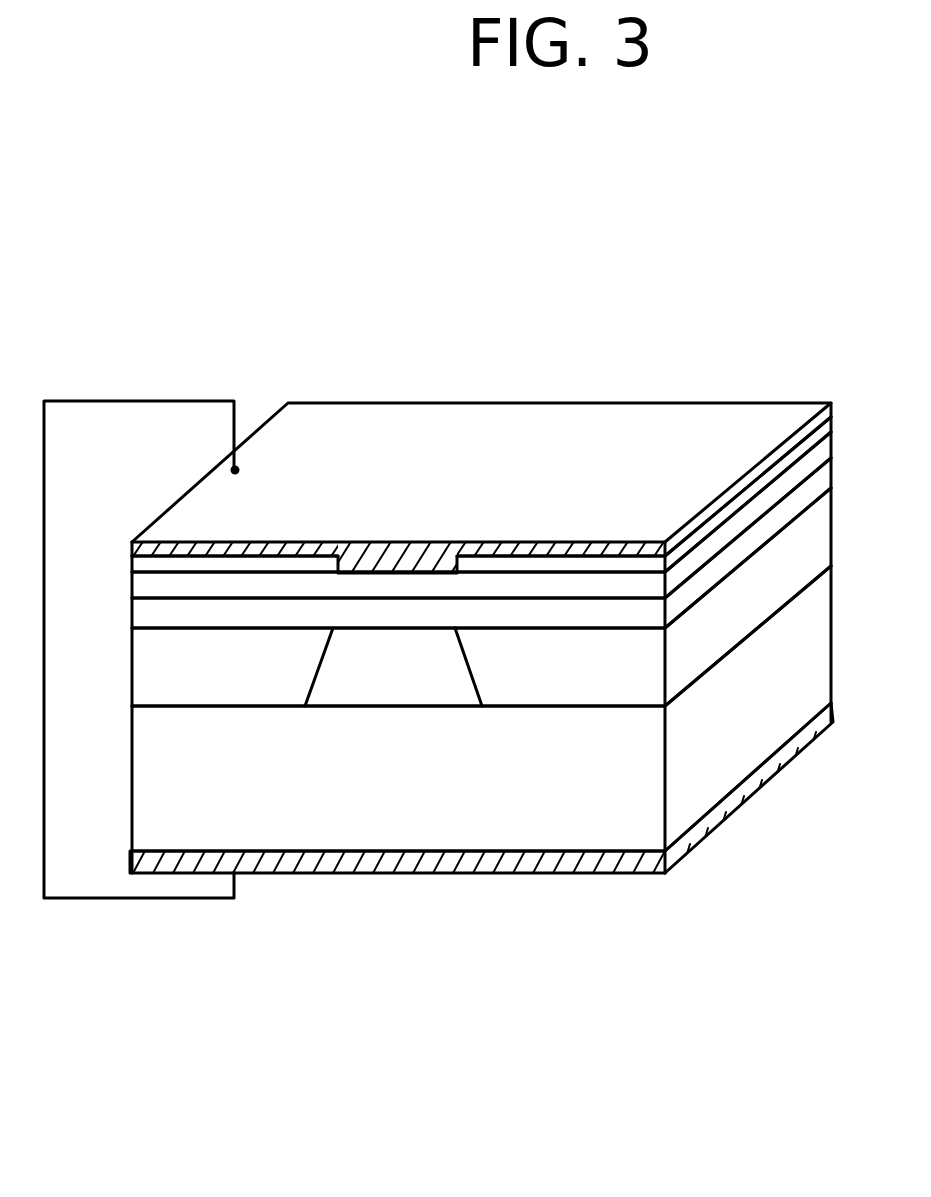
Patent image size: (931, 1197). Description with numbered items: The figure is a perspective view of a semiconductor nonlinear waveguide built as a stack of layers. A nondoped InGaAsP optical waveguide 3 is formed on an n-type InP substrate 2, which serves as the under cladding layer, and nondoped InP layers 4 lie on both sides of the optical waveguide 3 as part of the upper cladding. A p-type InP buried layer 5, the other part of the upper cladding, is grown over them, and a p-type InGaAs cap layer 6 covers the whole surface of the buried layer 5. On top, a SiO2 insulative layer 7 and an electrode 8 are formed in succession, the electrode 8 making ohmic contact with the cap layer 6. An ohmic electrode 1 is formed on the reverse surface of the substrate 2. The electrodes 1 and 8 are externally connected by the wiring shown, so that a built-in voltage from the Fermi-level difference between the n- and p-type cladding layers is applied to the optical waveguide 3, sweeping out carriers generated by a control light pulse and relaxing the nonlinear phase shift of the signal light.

The ohmic electrode 1 is at (672, 866).
The n-type InP substrate 2 is at (573, 822).
The nondoped InGaAsP optical waveguide 3 is at (408, 673).
The nondoped InP layer 4 is at (280, 675).
The p-type InP buried layer 5 is at (708, 582).
The p-type InGaAs cap layer 6 is at (588, 590).
The SiO2 insulative layer 7 is at (522, 573).
The electrode 8 is at (417, 543).